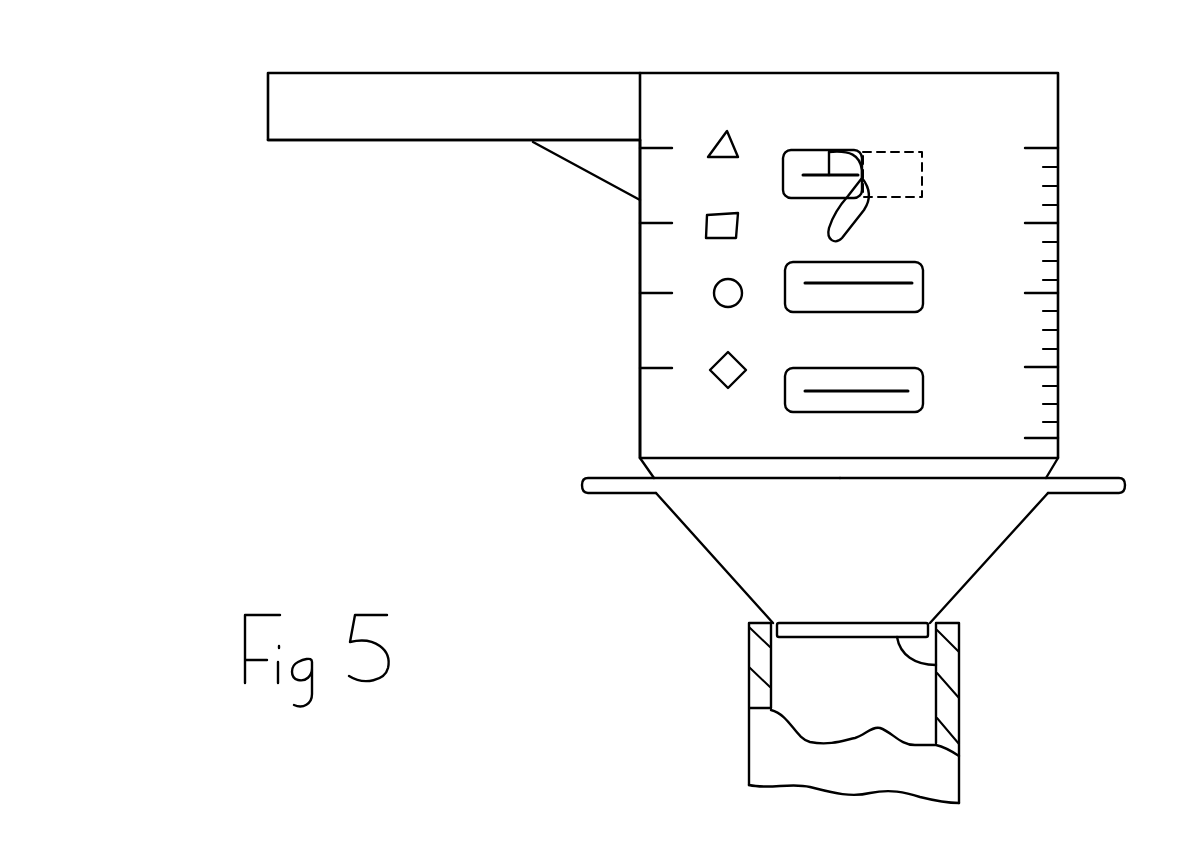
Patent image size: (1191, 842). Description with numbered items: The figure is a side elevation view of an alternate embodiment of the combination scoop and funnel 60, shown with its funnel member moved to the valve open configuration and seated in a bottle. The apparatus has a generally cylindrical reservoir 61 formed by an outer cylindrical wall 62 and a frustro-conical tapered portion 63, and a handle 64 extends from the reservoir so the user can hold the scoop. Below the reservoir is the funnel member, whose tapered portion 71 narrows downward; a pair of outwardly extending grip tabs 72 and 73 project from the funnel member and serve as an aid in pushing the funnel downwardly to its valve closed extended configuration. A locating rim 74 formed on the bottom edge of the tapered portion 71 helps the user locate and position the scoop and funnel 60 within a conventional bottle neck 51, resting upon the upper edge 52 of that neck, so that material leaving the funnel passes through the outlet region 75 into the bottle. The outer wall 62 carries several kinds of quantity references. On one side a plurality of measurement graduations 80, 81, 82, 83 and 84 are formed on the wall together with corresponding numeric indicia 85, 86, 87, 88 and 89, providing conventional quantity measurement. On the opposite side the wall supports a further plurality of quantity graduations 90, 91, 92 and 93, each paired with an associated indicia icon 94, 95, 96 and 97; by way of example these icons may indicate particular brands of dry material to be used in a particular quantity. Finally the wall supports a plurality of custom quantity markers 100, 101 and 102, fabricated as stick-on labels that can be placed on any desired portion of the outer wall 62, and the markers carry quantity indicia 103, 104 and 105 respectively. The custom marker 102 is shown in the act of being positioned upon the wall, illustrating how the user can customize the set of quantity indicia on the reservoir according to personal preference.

The bottle neck 51 is at (749, 686).
The upper edge 52 is at (760, 620).
The combination scoop and funnel 60 is at (495, 319).
The reservoir 61 is at (638, 388).
The outer cylindrical wall 62 is at (662, 415).
The frustro-conical tapered portion 63 is at (650, 470).
The handle 64 is at (410, 130).
The tapered portion 71 is at (698, 541).
The grip tab 72 is at (1095, 493).
The grip tab 73 is at (605, 497).
The locating rim 74 is at (936, 623).
The outlet opening 75 is at (936, 665).
The measurement graduation 80 is at (1042, 148).
The measurement graduation 81 is at (1043, 223).
The measurement graduation 82 is at (1043, 293).
The measurement graduation 83 is at (1043, 367).
The measurement graduation 84 is at (1043, 438).
The numeric indicia 85 is at (992, 137).
The numeric indicia 86 is at (1000, 206).
The numeric indicia 87 is at (1000, 283).
The numeric indicia 88 is at (1000, 352).
The numeric indicia 89 is at (1000, 420).
The quantity graduation 90 is at (656, 146).
The quantity graduation 91 is at (657, 223).
The quantity graduation 92 is at (656, 293).
The quantity graduation 93 is at (657, 368).
The indicia icon 94 is at (735, 133).
The indicia icon 95 is at (717, 213).
The indicia icon 96 is at (740, 278).
The indicia icon 97 is at (742, 352).
The custom quantity marker 100 is at (805, 412).
The custom quantity marker 101 is at (808, 312).
The custom quantity marker 102 is at (803, 150).
The quantity indicia 103 is at (875, 392).
The quantity indicia 104 is at (868, 283).
The quantity indicia 105 is at (829, 152).